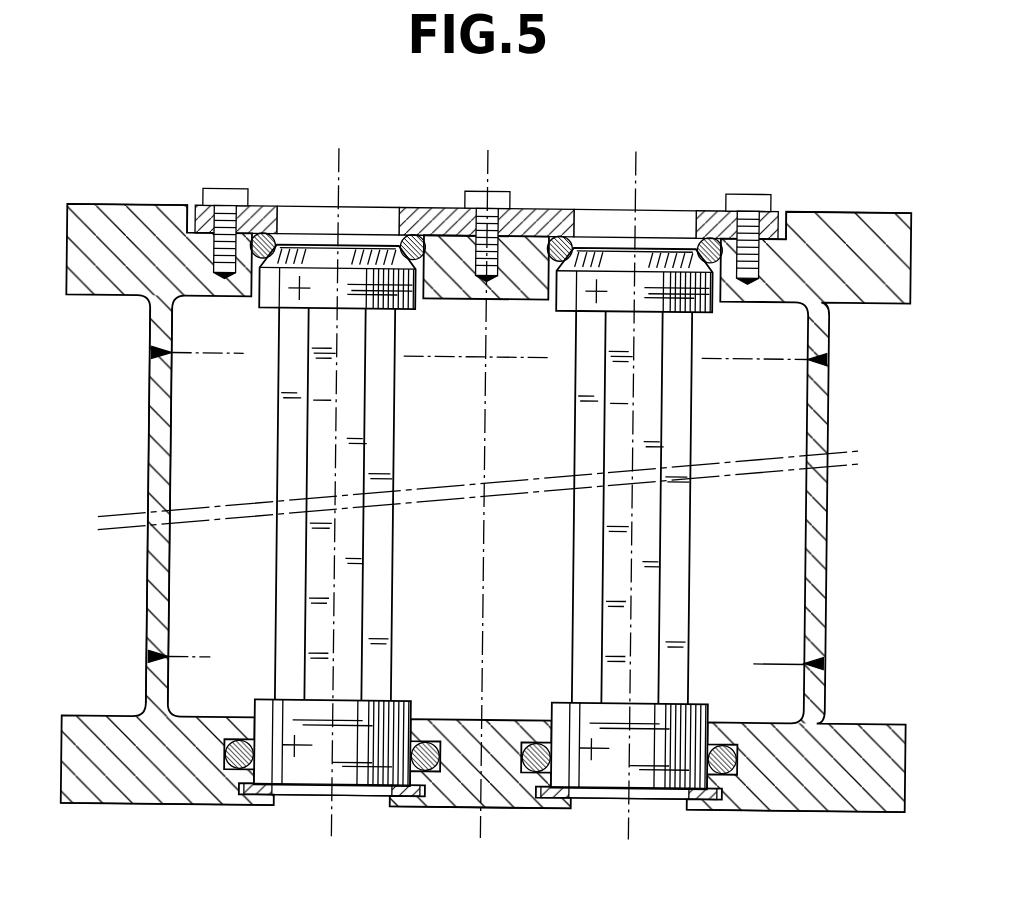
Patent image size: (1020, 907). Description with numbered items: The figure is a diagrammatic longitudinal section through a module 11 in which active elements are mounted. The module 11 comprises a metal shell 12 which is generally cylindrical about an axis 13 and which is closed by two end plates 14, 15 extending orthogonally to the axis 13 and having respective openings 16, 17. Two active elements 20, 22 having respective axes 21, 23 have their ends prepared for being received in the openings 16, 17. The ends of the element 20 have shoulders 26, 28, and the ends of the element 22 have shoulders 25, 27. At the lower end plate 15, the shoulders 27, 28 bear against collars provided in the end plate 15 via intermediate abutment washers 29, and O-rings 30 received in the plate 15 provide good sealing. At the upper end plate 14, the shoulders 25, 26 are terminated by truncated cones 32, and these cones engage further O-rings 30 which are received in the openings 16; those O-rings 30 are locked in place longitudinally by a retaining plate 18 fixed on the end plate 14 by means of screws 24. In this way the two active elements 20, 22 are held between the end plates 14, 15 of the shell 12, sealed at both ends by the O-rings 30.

The module 11 is at (503, 451).
The metal shell 12 is at (146, 576).
The axis 13 is at (487, 836).
The end plate 14 is at (128, 243).
The end plate 15 is at (157, 781).
The opening 16 is at (416, 306).
The opening 17 is at (280, 803).
The retaining plate 18 is at (538, 214).
The active element 20 is at (276, 578).
The axis 21 is at (340, 836).
The active element 22 is at (573, 594).
The axis 23 is at (636, 836).
The screw 24 is at (222, 195).
The shoulder 25 is at (647, 266).
The shoulder 26 is at (350, 264).
The shoulder 27 is at (703, 705).
The shoulder 28 is at (283, 720).
The abutment washer 29 is at (411, 802).
The O-ring 30 is at (263, 237).
The truncated cone 32 is at (258, 312).